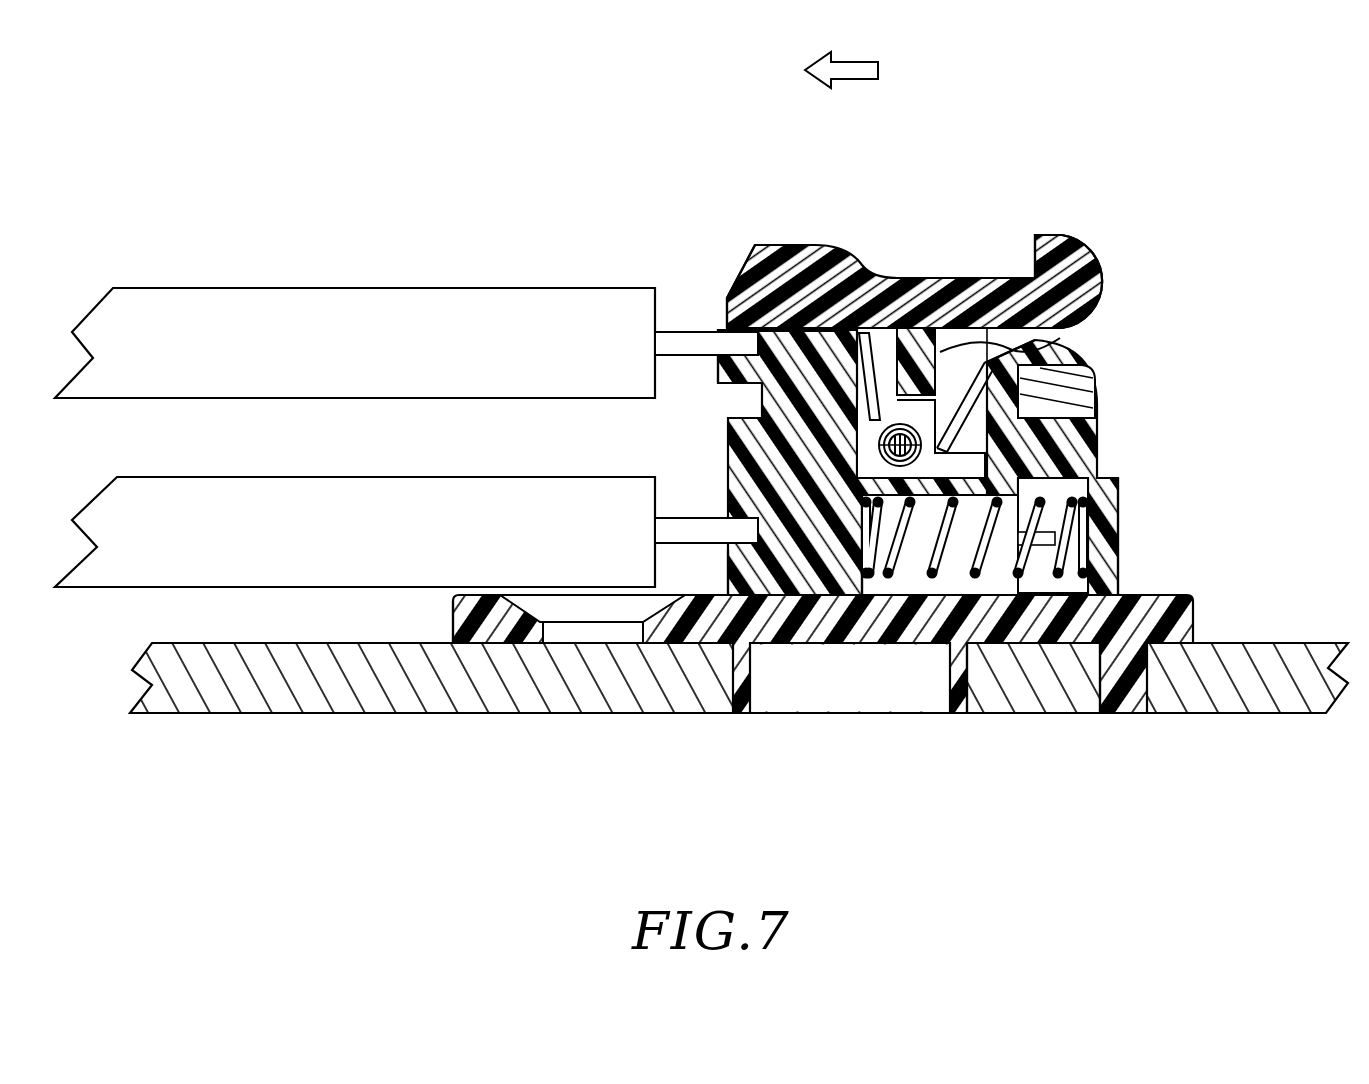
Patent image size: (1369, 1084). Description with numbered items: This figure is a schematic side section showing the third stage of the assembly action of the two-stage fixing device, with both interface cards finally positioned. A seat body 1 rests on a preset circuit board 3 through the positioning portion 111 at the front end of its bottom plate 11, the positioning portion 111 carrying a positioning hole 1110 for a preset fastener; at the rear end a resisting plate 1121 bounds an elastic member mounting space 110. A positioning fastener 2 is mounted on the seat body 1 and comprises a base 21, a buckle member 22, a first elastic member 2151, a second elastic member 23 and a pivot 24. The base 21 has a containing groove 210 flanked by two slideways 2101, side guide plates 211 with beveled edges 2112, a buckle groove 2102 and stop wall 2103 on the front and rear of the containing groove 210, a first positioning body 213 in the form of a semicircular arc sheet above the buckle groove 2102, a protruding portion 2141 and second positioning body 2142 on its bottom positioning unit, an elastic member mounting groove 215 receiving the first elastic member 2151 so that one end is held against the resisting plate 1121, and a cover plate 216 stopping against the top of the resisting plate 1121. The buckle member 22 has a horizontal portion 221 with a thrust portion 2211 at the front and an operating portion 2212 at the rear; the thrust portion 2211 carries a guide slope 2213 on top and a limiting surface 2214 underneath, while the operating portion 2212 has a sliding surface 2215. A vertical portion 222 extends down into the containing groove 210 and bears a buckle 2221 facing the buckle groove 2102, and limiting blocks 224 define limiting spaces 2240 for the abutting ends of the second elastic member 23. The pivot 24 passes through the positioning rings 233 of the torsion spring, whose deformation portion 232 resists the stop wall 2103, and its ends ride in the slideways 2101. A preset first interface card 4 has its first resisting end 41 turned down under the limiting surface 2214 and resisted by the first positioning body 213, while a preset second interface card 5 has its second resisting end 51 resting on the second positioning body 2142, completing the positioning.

The seat body 1 is at (1257, 604).
The bottom plate 11 is at (1167, 622).
The elastic member mounting space 110 is at (1122, 560).
The positioning portion 111 is at (473, 628).
The positioning hole 1110 is at (557, 630).
The resisting plate 1121 is at (1107, 546).
The positioning fastener 2 is at (1135, 204).
The base 21 is at (1180, 272).
The containing groove 210 is at (1015, 352).
The slideway 2101 is at (920, 442).
The buckle groove 2102 is at (748, 401).
The stop wall 2103 is at (1010, 388).
The side guide plate 211 is at (1042, 330).
The beveled edge 2112 is at (1027, 343).
The first positioning body 213 is at (768, 330).
The protruding portion 2141 is at (740, 566).
The second positioning body 2142 is at (772, 572).
The elastic member mounting groove 215 is at (1023, 573).
The first elastic member 2151 is at (1045, 576).
The cover plate 216 is at (1086, 468).
The buckle member 22 is at (1040, 204).
The horizontal portion 221 is at (975, 327).
The thrust portion 2211 is at (815, 248).
The operating portion 2212 is at (1077, 256).
The guide slope 2213 is at (745, 258).
The limiting surface 2214 is at (748, 330).
The sliding surface 2215 is at (973, 330).
The vertical portion 222 is at (840, 498).
The buckle 2221 is at (767, 430).
The limiting block 224 is at (957, 363).
The limiting space 2240 is at (880, 357).
The second elastic member 23 is at (1185, 383).
The deformation portion 232 is at (1052, 366).
The positioning ring 233 is at (900, 468).
The pivot 24 is at (1092, 500).
The preset circuit board 3 is at (311, 690).
The preset first interface card 4 is at (372, 318).
The first resisting end 41 is at (672, 345).
The preset second interface card 5 is at (376, 503).
The second resisting end 51 is at (700, 531).